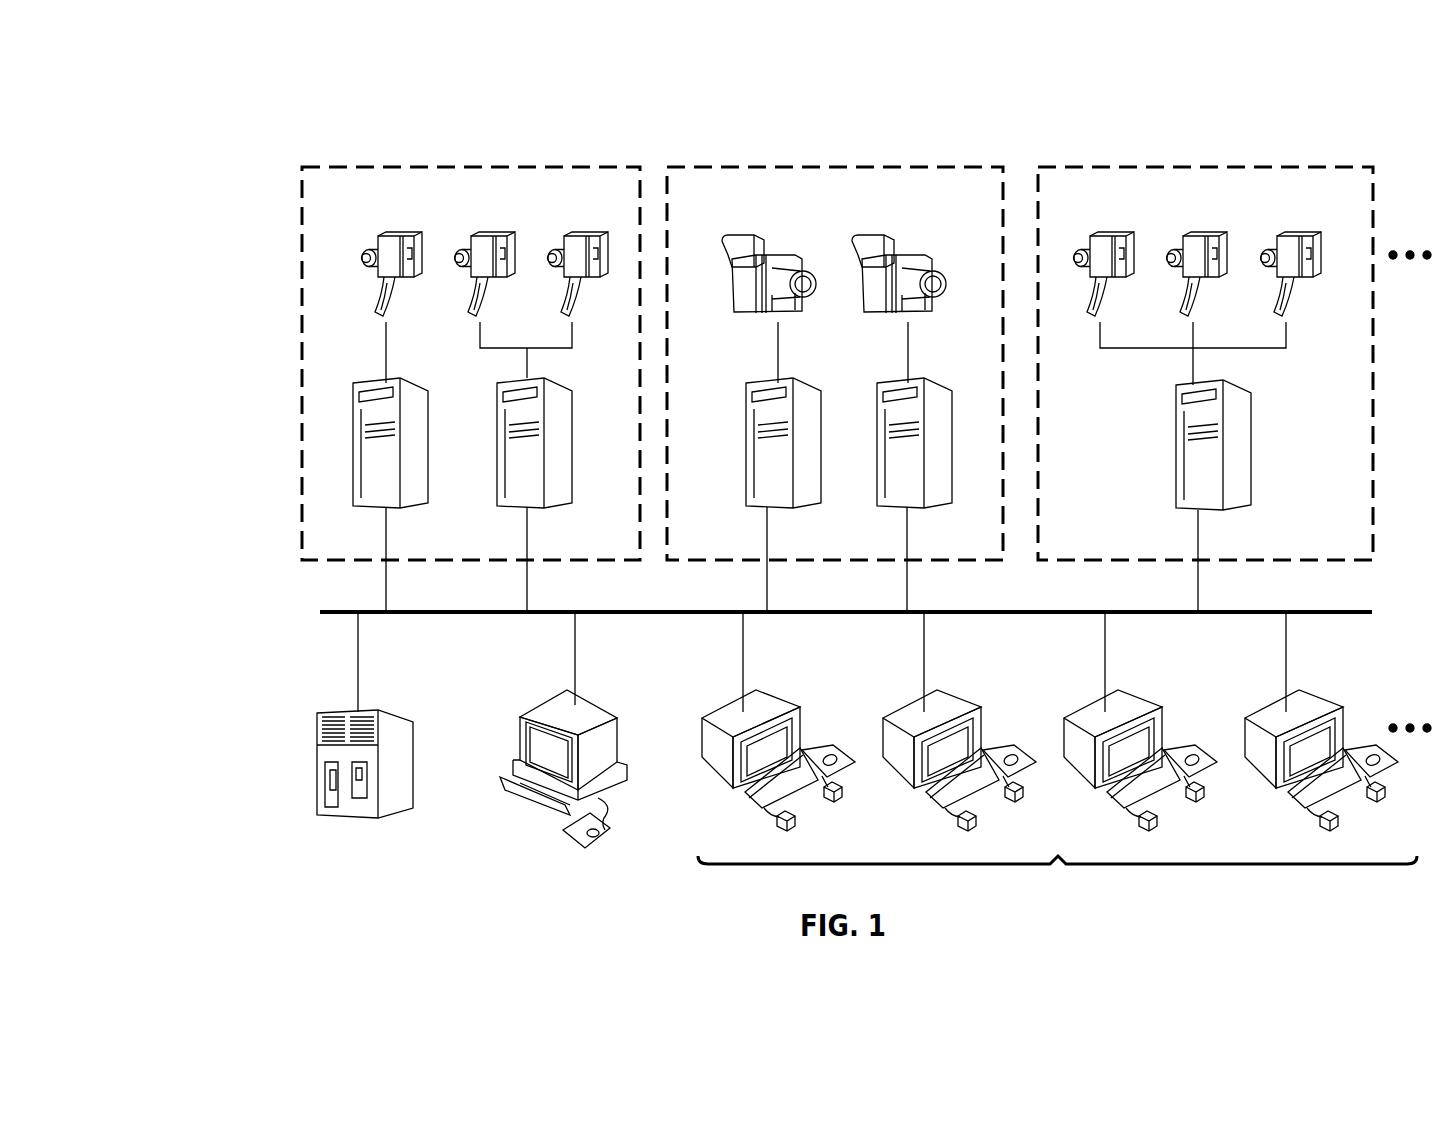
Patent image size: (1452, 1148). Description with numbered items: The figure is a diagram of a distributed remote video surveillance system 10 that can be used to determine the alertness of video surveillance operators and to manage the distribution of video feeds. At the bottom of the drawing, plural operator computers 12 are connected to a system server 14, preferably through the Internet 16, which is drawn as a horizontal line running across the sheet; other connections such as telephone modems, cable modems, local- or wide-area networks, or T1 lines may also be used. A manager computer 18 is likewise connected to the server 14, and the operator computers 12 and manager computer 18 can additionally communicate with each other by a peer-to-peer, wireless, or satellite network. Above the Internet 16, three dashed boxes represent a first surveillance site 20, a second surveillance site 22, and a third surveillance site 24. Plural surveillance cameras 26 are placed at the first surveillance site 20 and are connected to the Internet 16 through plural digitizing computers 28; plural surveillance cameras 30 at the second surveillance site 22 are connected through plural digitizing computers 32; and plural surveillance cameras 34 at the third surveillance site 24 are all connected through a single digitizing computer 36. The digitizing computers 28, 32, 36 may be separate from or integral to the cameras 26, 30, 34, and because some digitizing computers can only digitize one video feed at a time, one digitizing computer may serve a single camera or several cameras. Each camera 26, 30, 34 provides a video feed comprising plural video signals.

The video surveillance system 10 is at (302, 115).
The operator computers 12 is at (792, 790).
The system server 14 is at (321, 812).
The Internet 16 is at (1345, 614).
The manager computer 18 is at (516, 800).
The first surveillance site 20 is at (578, 166).
The second surveillance site 22 is at (803, 166).
The third surveillance site 24 is at (1170, 166).
The surveillance cameras 26 is at (393, 228).
The digitizing computers 28 is at (379, 506).
The surveillance cameras 30 is at (762, 243).
The digitizing computers 32 is at (757, 502).
The surveillance cameras 34 is at (1112, 230).
The digitizing computer 36 is at (1178, 506).